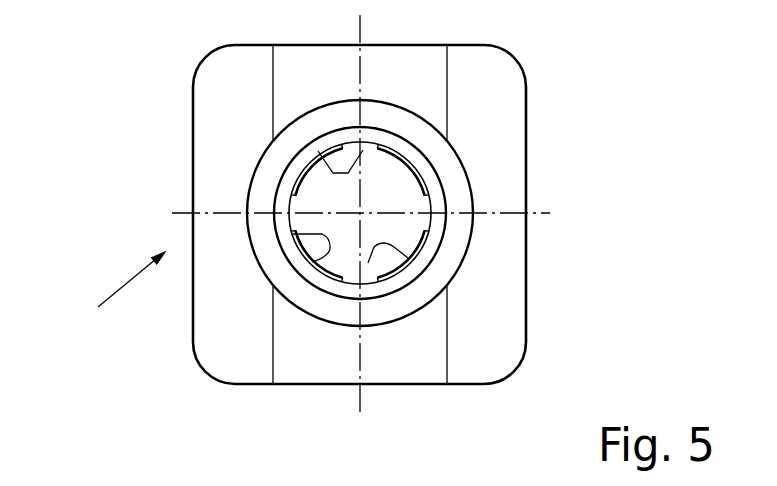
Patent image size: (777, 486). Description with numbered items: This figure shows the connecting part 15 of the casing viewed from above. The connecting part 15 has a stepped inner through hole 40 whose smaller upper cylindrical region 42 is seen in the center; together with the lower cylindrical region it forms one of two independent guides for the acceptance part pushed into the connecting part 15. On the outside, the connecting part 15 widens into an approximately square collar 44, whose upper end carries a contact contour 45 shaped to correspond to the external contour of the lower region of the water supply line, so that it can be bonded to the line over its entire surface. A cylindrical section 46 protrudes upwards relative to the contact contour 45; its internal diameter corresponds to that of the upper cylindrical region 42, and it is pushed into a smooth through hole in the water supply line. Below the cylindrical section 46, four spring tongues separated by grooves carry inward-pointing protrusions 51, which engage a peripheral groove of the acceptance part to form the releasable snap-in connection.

The connecting part 15 is at (117, 295).
The inner through hole 40 is at (390, 234).
The upper cylindrical region 42 is at (447, 208).
The square collar 44 is at (193, 152).
The contact contour 45 is at (252, 105).
The cylindrical section 46 is at (432, 184).
The protrusions 51 is at (363, 150).